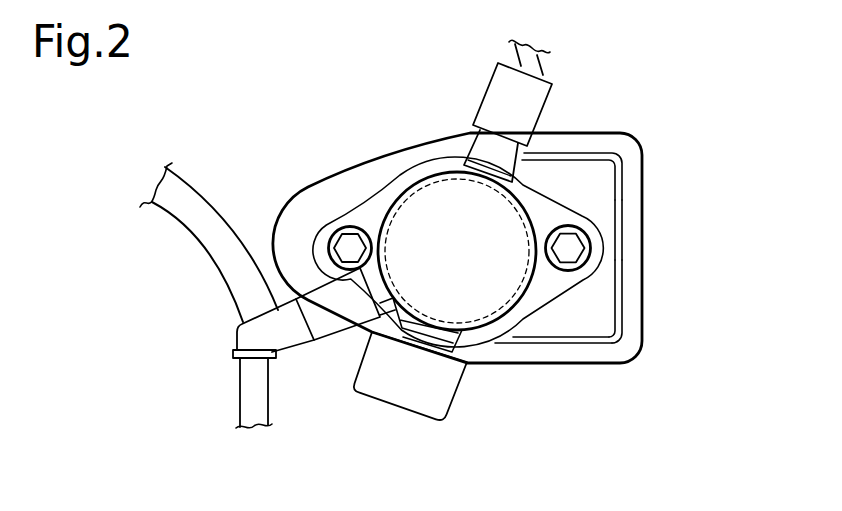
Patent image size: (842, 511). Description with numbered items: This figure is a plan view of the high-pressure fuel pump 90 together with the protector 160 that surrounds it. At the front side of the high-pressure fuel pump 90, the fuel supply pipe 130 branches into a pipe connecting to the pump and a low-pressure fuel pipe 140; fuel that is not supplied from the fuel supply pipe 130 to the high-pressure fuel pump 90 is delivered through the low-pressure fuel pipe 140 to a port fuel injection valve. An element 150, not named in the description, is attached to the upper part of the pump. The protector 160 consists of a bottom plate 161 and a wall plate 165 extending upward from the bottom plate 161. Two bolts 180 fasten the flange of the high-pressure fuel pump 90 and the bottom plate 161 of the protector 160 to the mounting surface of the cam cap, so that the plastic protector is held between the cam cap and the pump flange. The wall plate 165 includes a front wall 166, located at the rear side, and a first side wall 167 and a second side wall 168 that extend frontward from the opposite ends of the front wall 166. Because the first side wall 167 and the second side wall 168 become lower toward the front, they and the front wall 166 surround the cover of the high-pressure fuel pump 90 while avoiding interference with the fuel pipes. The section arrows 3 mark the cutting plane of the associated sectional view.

The high-pressure fuel pump 90 is at (422, 202).
The fuel supply pipe 130 is at (262, 398).
The low-pressure fuel pipe 140 is at (185, 188).
The connector 150 is at (522, 54).
The protector 160 is at (655, 93).
The bottom plate 161 is at (298, 212).
The wall plate 165 is at (638, 174).
The front wall 166 is at (639, 309).
The first side wall 167 is at (583, 356).
The second side wall 168 is at (593, 138).
The bolts 180 is at (348, 230).
The section line III-III 3 is at (297, 247).